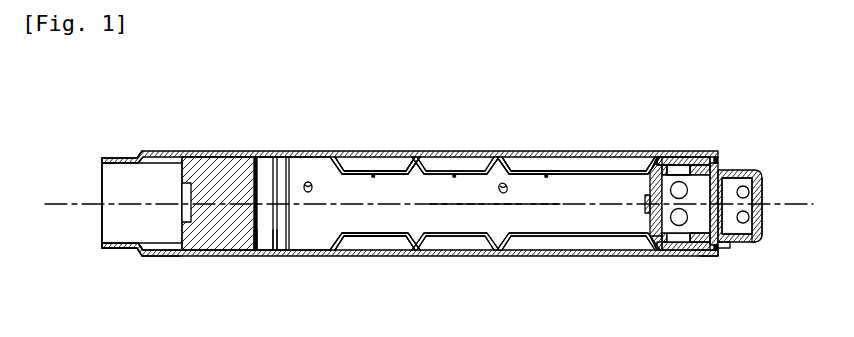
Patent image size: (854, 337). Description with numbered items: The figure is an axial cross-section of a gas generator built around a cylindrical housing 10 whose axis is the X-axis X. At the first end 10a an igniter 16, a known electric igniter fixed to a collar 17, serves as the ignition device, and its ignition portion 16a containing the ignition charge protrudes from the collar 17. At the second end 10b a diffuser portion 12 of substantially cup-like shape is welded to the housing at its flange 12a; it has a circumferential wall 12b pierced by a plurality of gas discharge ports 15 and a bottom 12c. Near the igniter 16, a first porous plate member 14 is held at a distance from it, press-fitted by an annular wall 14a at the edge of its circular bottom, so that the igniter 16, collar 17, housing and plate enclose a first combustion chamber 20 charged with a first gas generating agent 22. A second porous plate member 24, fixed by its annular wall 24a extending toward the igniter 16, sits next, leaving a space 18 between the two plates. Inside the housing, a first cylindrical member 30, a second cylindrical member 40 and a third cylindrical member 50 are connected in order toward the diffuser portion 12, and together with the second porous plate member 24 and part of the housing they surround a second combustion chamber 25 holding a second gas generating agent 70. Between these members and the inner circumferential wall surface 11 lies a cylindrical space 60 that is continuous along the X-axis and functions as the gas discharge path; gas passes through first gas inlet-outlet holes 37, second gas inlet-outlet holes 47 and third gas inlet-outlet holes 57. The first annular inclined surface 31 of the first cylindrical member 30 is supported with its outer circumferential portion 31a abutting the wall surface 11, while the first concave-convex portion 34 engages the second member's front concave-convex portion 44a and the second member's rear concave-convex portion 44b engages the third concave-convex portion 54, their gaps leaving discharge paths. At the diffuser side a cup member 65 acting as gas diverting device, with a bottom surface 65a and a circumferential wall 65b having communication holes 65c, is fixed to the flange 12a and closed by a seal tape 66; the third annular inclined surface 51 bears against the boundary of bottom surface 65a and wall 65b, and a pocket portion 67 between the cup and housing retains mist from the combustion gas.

The cylindrical housing 10 is at (411, 148).
The first end 10a is at (140, 152).
The second end 10b is at (721, 257).
The inner circumferential wall surface 11 is at (307, 235).
The diffuser portion 12 is at (768, 163).
The flange 12a is at (723, 244).
The circumferential wall 12b is at (769, 235).
The bottom 12c is at (766, 188).
The first porous plate member 14 is at (263, 178).
The annular wall 14a is at (247, 246).
The gas discharge ports 15 is at (747, 169).
The igniter 16 is at (107, 218).
The ignition portion 16a is at (190, 223).
The collar 17 is at (160, 248).
The space 18 is at (267, 223).
The first combustion chamber 20 is at (204, 167).
The first gas generating agent 22 is at (218, 179).
The second porous plate member 24 is at (292, 177).
The annular wall 24a is at (274, 246).
The second combustion chamber 25 is at (503, 226).
The first cylindrical member 30 is at (355, 180).
The first annular inclined surface 31 is at (330, 168).
The outer circumferential portion 31a is at (332, 251).
The first concave-convex portion 34 is at (418, 168).
The first gas inlet-outlet holes 37 is at (374, 178).
The second cylindrical member 40 is at (427, 180).
The 2a-th concave-convex portion 44a is at (398, 172).
The 2b-th concave-convex portion 44b is at (522, 162).
The second gas inlet-outlet holes 47 is at (455, 177).
The third cylindrical member 50 is at (552, 180).
The third annular inclined surface 51 is at (650, 165).
The third concave-convex portion 54 is at (488, 170).
The third gas inlet-outlet holes 57 is at (585, 176).
The cylindrical space 60 is at (571, 167).
The cup member 65 is at (693, 166).
The bottom surface 65a is at (661, 247).
The circumferential wall 65b is at (688, 239).
The communication holes 65c is at (679, 170).
The seal tape 66 is at (713, 190).
The pocket portion 67 is at (664, 166).
The second gas generating agent 70 is at (313, 187).
The X-axis X is at (435, 207).